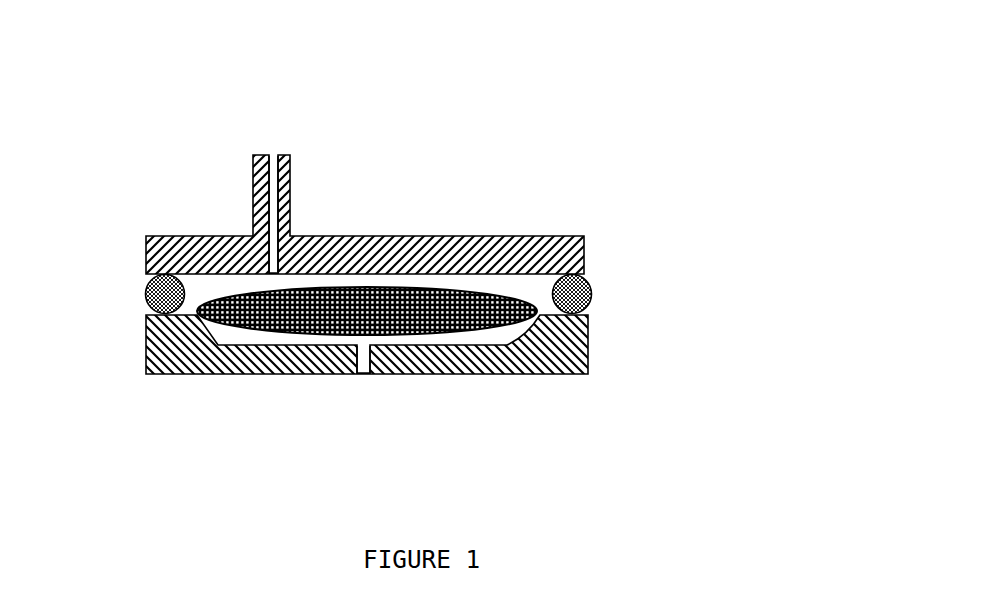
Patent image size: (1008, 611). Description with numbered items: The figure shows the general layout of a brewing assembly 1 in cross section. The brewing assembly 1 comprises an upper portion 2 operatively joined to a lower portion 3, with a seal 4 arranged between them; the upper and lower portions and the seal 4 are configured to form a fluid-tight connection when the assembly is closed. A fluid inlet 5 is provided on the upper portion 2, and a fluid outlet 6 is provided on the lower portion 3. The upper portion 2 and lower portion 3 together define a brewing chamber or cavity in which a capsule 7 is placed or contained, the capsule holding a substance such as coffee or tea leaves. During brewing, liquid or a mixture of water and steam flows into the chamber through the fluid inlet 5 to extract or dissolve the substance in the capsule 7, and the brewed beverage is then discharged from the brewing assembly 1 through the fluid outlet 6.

The brewing assembly 1 is at (465, 243).
The upper portion 2 is at (358, 236).
The lower portion 3 is at (573, 375).
The seal 4 is at (147, 291).
The fluid inlet 5 is at (273, 166).
The fluid outlet 6 is at (355, 375).
The capsule 7 is at (463, 375).